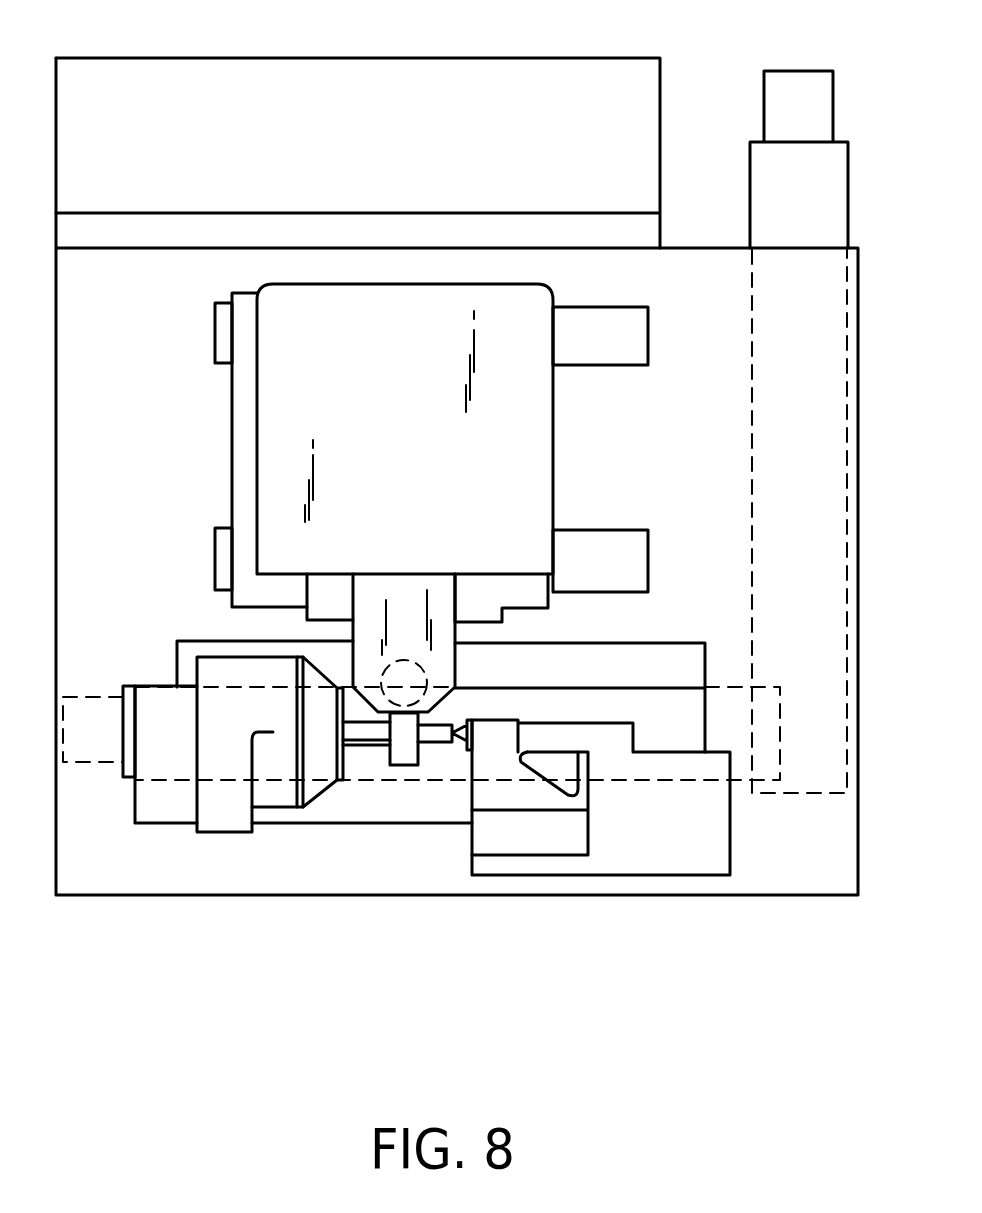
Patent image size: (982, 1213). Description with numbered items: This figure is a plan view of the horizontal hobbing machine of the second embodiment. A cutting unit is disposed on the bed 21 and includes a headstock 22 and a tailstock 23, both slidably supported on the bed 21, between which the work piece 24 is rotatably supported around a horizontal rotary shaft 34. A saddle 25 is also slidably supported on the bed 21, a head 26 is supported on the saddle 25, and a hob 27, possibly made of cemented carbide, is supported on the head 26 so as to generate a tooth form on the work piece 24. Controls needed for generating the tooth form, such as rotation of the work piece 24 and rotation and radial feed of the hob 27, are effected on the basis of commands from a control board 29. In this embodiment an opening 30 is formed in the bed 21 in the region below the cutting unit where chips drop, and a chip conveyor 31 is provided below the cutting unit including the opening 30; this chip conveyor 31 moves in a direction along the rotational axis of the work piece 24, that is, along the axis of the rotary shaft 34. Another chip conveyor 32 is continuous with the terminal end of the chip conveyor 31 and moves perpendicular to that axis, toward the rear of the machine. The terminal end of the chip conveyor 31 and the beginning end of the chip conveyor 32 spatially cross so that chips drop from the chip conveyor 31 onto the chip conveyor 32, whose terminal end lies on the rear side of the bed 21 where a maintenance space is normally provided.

The bed 21 is at (137, 860).
The headstock 22 is at (215, 812).
The tailstock 23 is at (510, 790).
The work piece 24 is at (400, 757).
The saddle 25 is at (520, 412).
The head 26 is at (390, 600).
The hob 27 is at (430, 678).
The control board 29 is at (582, 108).
The opening 30 is at (662, 650).
The chip conveyor 31 is at (737, 745).
The chip conveyor 32 is at (770, 181).
The horizontal rotary shaft 34 is at (437, 736).